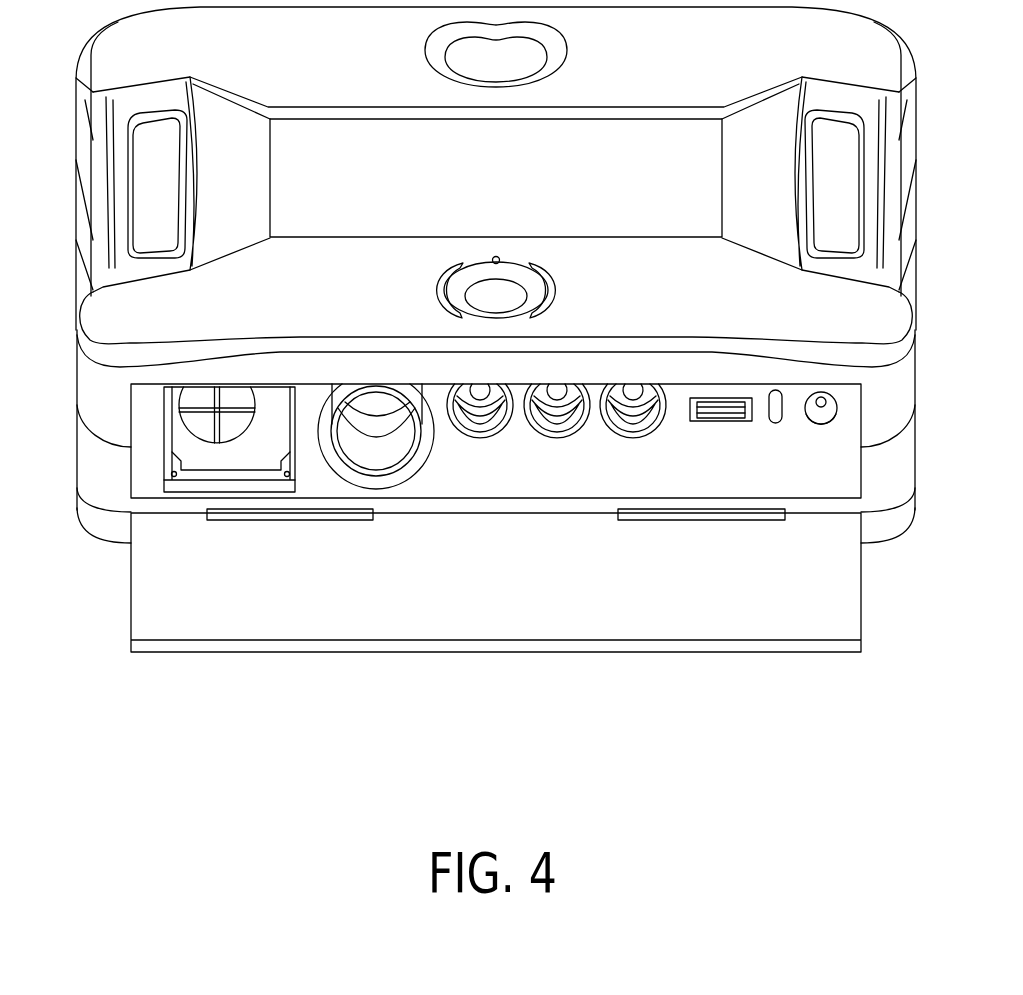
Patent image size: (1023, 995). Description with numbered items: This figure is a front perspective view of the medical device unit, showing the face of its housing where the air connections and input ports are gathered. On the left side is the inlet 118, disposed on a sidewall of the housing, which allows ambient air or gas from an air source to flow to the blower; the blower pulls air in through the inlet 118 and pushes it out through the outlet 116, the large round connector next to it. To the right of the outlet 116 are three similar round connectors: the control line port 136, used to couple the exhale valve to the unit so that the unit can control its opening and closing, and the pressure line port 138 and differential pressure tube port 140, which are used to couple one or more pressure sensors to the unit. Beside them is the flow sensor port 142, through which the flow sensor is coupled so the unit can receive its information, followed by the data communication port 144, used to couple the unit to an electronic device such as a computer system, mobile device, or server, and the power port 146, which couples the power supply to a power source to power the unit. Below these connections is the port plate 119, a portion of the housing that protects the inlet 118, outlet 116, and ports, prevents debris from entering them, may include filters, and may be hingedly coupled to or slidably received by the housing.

The outlet 116 is at (382, 472).
The inlet 118 is at (232, 442).
The port plate 119 is at (793, 643).
The control line port 136 is at (485, 438).
The pressure line port 138 is at (558, 440).
The differential pressure tube port 140 is at (643, 437).
The flow sensor port 142 is at (720, 421).
The data communication port 144 is at (775, 423).
The power port 146 is at (825, 425).